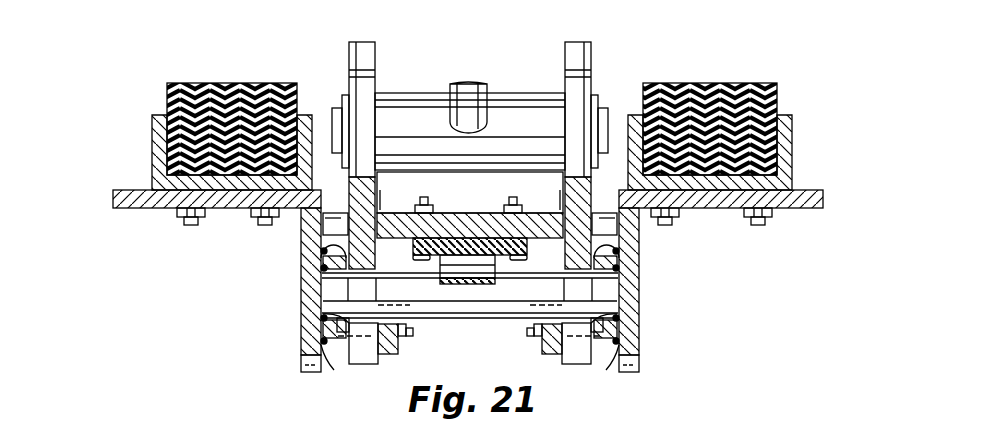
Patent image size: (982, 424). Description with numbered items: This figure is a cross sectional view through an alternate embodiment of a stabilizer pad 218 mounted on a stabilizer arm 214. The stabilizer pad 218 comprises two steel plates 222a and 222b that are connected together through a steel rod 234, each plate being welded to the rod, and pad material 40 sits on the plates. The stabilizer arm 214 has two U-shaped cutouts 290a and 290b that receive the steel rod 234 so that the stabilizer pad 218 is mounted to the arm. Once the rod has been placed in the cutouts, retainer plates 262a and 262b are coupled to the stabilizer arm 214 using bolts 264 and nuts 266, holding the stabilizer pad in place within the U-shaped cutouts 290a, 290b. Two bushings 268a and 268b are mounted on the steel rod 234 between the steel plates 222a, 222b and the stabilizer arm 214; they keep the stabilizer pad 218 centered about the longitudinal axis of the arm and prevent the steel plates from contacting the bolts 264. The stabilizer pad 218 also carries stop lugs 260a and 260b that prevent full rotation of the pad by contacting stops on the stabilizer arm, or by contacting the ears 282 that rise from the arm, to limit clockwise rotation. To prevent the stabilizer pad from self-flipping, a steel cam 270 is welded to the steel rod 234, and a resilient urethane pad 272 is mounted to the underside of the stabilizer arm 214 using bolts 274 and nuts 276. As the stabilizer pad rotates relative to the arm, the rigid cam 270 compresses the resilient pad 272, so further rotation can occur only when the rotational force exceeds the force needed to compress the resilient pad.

The brush block 40 is at (217, 83).
The stabilizer arm 214 is at (488, 213).
The stabilizer pad 218 is at (679, 52).
The steel plate 222a is at (140, 190).
The steel plate 222b is at (815, 190).
The steel rod 234 is at (452, 307).
The stop lug 260a is at (332, 214).
The stop lug 260b is at (606, 214).
The retainer plate 262a is at (371, 350).
The retainer plate 262b is at (569, 350).
The bolt 264 is at (327, 349).
The nut 266 is at (402, 348).
The bushing 268a is at (322, 248).
The bushing 268b is at (618, 248).
The steel cam 270 is at (475, 262).
The resilient urethane pad 272 is at (460, 214).
The bolt 274 is at (433, 192).
The nut 276 is at (531, 199).
The ear 282 is at (350, 43).
The U-shaped cutout 290a is at (320, 306).
The U-shaped cutout 290b is at (618, 303).